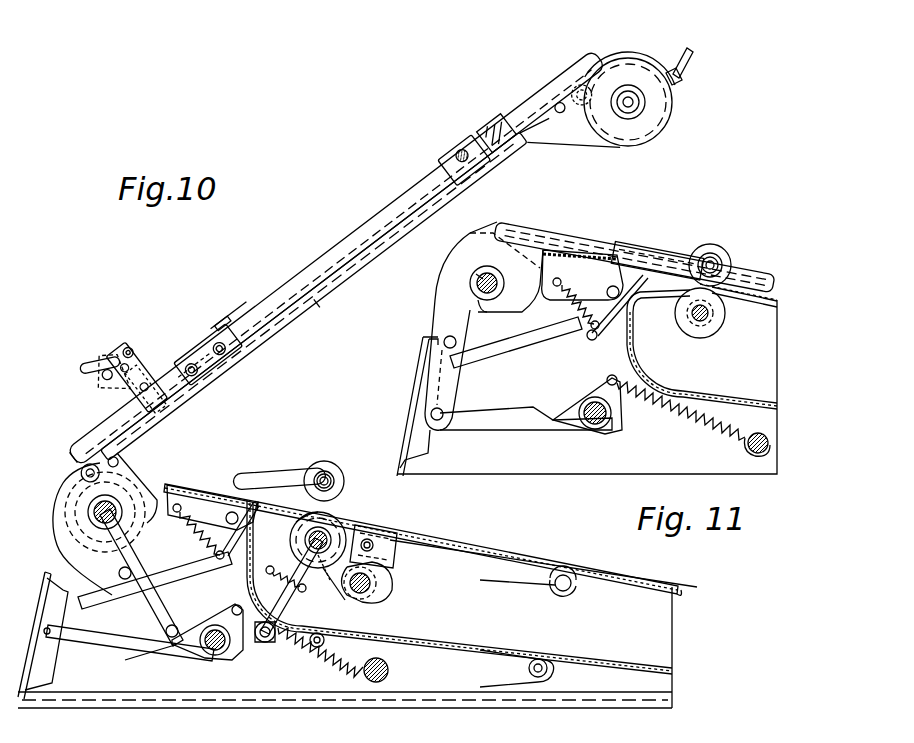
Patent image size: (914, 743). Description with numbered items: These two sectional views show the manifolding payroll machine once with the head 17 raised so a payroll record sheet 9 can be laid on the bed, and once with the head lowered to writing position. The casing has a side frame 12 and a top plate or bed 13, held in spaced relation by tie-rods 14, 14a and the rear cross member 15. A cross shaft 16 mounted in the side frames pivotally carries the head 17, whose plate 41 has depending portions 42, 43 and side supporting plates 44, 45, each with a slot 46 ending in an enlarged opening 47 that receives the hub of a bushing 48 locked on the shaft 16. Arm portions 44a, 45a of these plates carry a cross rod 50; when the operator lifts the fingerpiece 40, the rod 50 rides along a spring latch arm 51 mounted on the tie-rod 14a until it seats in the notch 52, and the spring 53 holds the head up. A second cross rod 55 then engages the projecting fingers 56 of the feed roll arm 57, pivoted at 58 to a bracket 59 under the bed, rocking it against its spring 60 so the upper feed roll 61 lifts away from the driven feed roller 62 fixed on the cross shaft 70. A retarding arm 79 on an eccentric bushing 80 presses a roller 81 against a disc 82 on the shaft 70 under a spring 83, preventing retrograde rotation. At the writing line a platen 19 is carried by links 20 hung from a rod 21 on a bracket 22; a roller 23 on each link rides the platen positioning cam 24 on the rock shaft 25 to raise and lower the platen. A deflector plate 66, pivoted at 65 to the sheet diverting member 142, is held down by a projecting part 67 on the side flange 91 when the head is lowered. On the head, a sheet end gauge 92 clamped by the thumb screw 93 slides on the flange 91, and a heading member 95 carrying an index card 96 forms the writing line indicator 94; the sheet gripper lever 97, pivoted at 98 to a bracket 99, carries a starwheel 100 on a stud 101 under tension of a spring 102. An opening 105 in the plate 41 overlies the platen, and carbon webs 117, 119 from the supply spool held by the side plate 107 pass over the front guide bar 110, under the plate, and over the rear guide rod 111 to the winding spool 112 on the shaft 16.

In FIG. 10, the payroll record sheet 9 is at (690, 585).
In FIG. 11, the payroll record sheet 9 is at (770, 287).
In FIG. 10, the side frame 12 is at (621, 631).
In FIG. 11, the side frame 12 is at (587, 387).
In FIG. 10, the top plate or bed 13 is at (532, 557).
In FIG. 10, the tie-rod 14 is at (378, 682).
In FIG. 11, the tie-rod 14 is at (758, 456).
In FIG. 10, the tie-rod 14a is at (220, 656).
In FIG. 11, the tie-rod 14a is at (612, 425).
In FIG. 10, the rear cross member 15 is at (38, 600).
In FIG. 11, the rear cross member 15 is at (412, 375).
In FIG. 10, the cross shaft 16 is at (90, 510).
In FIG. 11, the cross shaft 16 is at (472, 285).
In FIG. 10, the head or sheet holder 17 is at (680, 108).
In FIG. 10, the platen 19 is at (430, 534).
In FIG. 10, the links 20 is at (506, 586).
In FIG. 10, the rod 21 is at (560, 592).
In FIG. 10, the bracket 22 is at (575, 575).
In FIG. 10, the roller 23 is at (400, 560).
In FIG. 10, the platen positioning cam 24 is at (392, 597).
In FIG. 10, the rock shaft 25 is at (358, 596).
In FIG. 10, the fingerpiece 40 is at (692, 50).
In FIG. 10, the head plate 41 is at (355, 225).
In FIG. 10, the depending portion 42 is at (652, 58).
In FIG. 10, the depending portion 43 is at (60, 535).
In FIG. 11, the depending portion 43 is at (432, 316).
In FIG. 11, the side supporting plate 44 is at (447, 368).
In FIG. 11, the extending arm portion 44a is at (440, 392).
In FIG. 10, the side supporting plate 45 is at (130, 580).
In FIG. 10, the extending arm portion 45a is at (205, 598).
In FIG. 11, the extending arm portion 45a is at (587, 404).
In FIG. 11, the slot 46 is at (488, 312).
In FIG. 10, the enlarged opening 47 is at (120, 487).
In FIG. 11, the enlarged opening 47 is at (474, 272).
In FIG. 10, the bushing 48 is at (95, 513).
In FIG. 11, the bushing 48 is at (490, 268).
In FIG. 10, the cross rod 50 is at (172, 640).
In FIG. 11, the cross rod 50 is at (430, 415).
In FIG. 10, the spring latch arm 51 is at (129, 642).
In FIG. 11, the spring latch arm 51 is at (526, 418).
In FIG. 10, the notch 52 is at (143, 656).
In FIG. 11, the notch 52 is at (548, 416).
In FIG. 10, the spring 53 is at (352, 664).
In FIG. 11, the spring 53 is at (712, 428).
In FIG. 10, the second cross rod 55 is at (118, 573).
In FIG. 11, the second cross rod 55 is at (444, 340).
In FIG. 10, the projecting fingers 56 is at (175, 580).
In FIG. 11, the projecting fingers 56 is at (527, 340).
In FIG. 10, the feed roll arm 57 is at (280, 472).
In FIG. 11, the feed roll arm 57 is at (664, 245).
In FIG. 10, the pivot 58 is at (252, 498).
In FIG. 11, the pivot 58 is at (616, 256).
In FIG. 10, the bracket 59 is at (208, 497).
In FIG. 11, the bracket 59 is at (580, 268).
In FIG. 10, the spring 60 is at (182, 508).
In FIG. 11, the spring 60 is at (580, 306).
In FIG. 10, the upper feed roll 61 is at (342, 475).
In FIG. 11, the upper feed roll 61 is at (725, 250).
In FIG. 10, the driven feed roller 62 is at (305, 540).
In FIG. 11, the driven feed roller 62 is at (726, 318).
In FIG. 10, the pivot 65 is at (240, 539).
In FIG. 11, the pivot 65 is at (617, 315).
In FIG. 10, the deflector plate 66 is at (340, 508).
In FIG. 11, the deflector plate 66 is at (668, 293).
In FIG. 10, the projecting part 67 is at (218, 370).
In FIG. 11, the projecting part 67 is at (690, 250).
In FIG. 10, the cross shaft 70 is at (313, 545).
In FIG. 11, the cross shaft 70 is at (703, 322).
In FIG. 10, the arm 79 is at (296, 600).
In FIG. 10, the eccentric bushing 80 is at (264, 642).
In FIG. 10, the roller 81 is at (325, 580).
In FIG. 10, the disc 82 is at (296, 521).
In FIG. 10, the spring 83 is at (284, 579).
In FIG. 10, the sheet guide flange 91 is at (284, 290).
In FIG. 11, the sheet guide flange 91 is at (762, 265).
In FIG. 10, the sheet end gauge 92 is at (480, 135).
In FIG. 10, the thumb screw 93 is at (455, 148).
In FIG. 10, the writing line indicator 94 is at (250, 328).
In FIG. 10, the heading member 95 is at (230, 326).
In FIG. 10, the index card 96 is at (240, 320).
In FIG. 10, the sheet gripper lever 97 is at (118, 352).
In FIG. 10, the pivot 98 is at (140, 370).
In FIG. 10, the bracket 99 is at (170, 355).
In FIG. 10, the starwheel 100 is at (115, 398).
In FIG. 10, the stud 101 is at (130, 400).
In FIG. 10, the spring 102 is at (135, 360).
In FIG. 10, the opening 105 is at (305, 300).
In FIG. 10, the side plate 107 is at (660, 128).
In FIG. 10, the front guide bar 110 is at (558, 100).
In FIG. 10, the rear guide rod 111 is at (90, 455).
In FIG. 10, the winding spool 112 is at (80, 478).
In FIG. 10, the carbon web 117 is at (392, 205).
In FIG. 10, the carbon web 119 is at (490, 178).
In FIG. 10, the sheet diverting member 142 is at (485, 650).